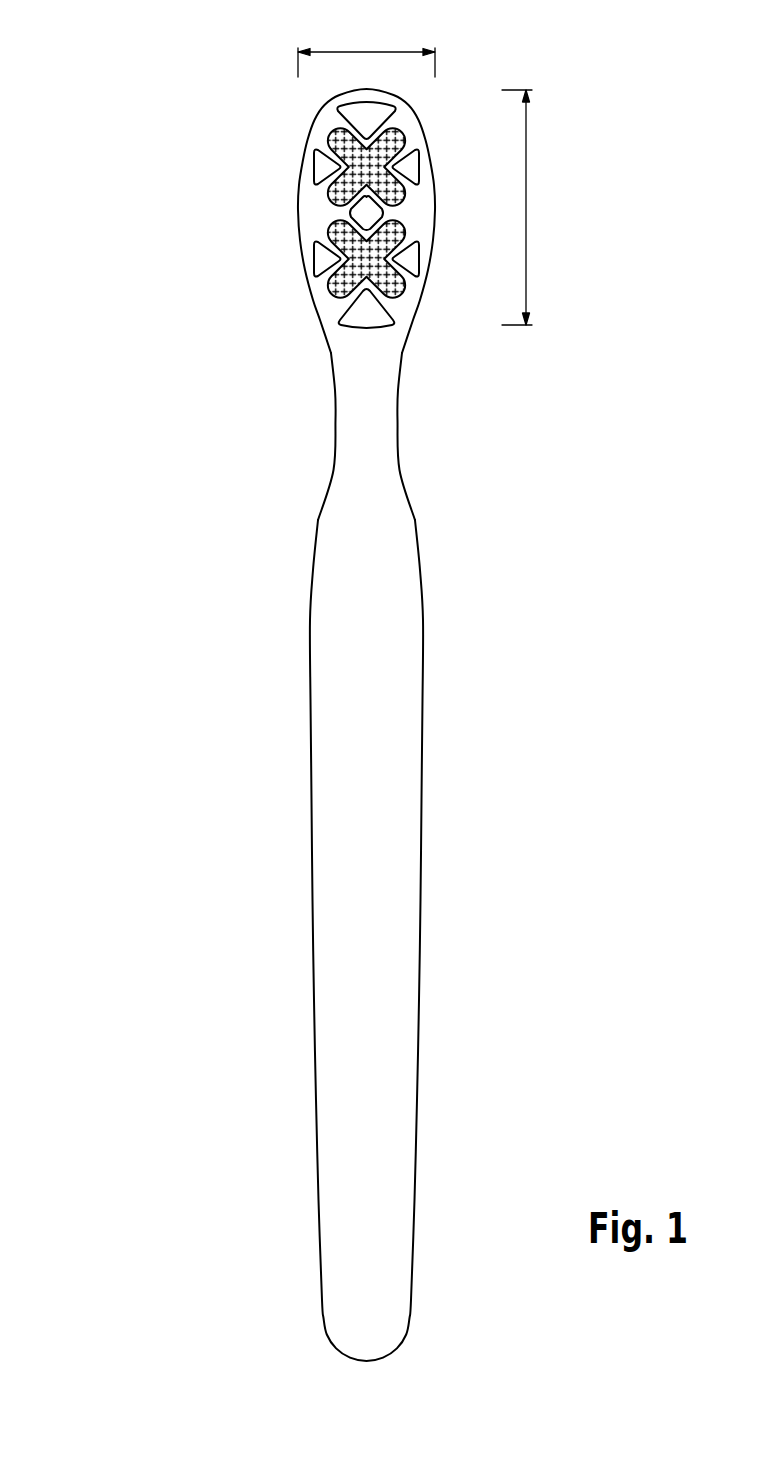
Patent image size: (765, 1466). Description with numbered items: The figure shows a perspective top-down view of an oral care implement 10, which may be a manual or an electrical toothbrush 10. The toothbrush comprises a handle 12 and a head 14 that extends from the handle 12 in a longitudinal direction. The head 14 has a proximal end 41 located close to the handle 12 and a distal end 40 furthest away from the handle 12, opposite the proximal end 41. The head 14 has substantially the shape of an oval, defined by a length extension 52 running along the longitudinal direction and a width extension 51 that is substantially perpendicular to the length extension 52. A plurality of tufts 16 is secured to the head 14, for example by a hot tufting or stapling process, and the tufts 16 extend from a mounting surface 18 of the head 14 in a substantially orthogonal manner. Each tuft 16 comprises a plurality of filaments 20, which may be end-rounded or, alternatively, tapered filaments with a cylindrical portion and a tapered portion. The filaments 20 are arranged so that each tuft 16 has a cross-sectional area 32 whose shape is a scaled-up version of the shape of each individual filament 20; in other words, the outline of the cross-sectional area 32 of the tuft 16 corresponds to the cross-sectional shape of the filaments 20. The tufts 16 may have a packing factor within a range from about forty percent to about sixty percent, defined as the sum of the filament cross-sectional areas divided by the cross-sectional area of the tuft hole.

The oral care implement 10 is at (192, 495).
The handle 12 is at (388, 918).
The head 14 is at (307, 125).
The tufts 16 is at (337, 290).
The mounting surface 18 is at (322, 208).
The filaments 20 is at (402, 141).
The cross-sectional area of the tufts 32 is at (322, 268).
The distal end 40 is at (433, 107).
The proximal end 41 is at (422, 338).
The width extension 51 is at (355, 52).
The length extension 52 is at (526, 218).